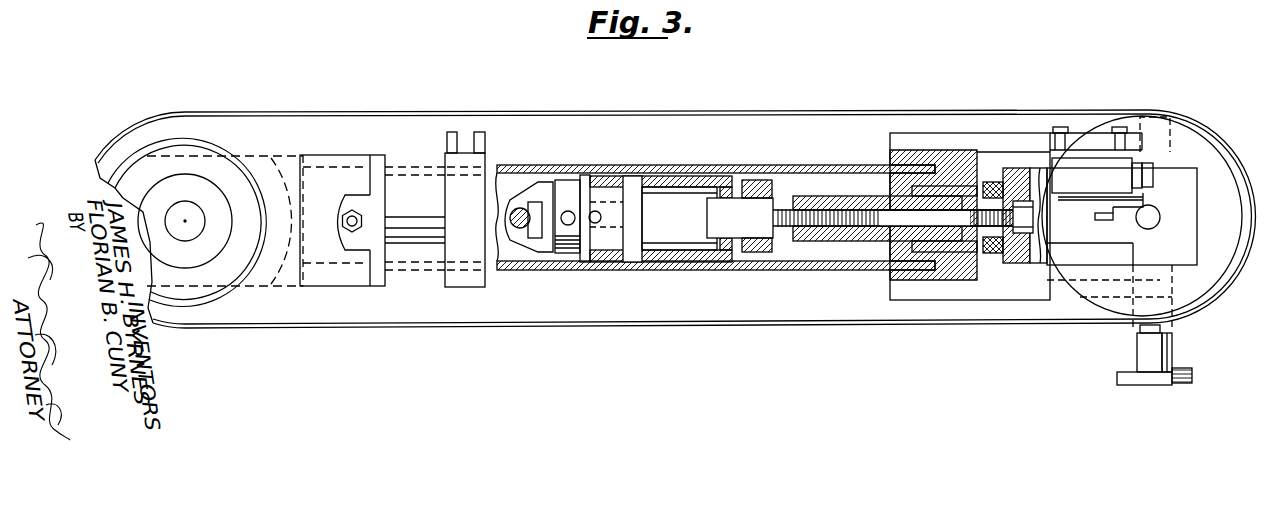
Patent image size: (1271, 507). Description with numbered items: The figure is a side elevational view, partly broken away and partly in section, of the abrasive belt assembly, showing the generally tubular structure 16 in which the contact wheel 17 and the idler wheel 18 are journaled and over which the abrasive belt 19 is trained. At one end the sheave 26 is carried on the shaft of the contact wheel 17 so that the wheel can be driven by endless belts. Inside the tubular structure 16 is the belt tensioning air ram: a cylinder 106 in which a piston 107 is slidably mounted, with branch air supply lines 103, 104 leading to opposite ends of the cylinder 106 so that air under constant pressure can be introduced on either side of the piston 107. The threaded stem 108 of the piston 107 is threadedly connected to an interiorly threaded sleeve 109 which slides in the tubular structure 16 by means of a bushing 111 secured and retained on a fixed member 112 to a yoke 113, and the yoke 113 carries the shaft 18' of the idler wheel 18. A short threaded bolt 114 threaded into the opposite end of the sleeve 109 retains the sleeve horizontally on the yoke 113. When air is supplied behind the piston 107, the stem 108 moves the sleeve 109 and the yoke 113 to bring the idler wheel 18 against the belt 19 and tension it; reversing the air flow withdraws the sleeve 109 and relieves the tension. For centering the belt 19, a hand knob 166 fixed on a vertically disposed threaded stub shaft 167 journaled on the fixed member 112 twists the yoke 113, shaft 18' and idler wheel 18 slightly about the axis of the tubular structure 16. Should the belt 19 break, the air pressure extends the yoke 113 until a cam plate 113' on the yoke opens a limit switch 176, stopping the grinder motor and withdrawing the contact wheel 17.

The sheave 26 is at (168, 142).
The contact wheel 17 is at (177, 120).
The abrasive belt 19 is at (664, 106).
The tubular structure 16 is at (556, 160).
The cylinder 106 is at (613, 177).
The piston 107 is at (637, 187).
The threaded stem 108 is at (760, 200).
The interiorly threaded sleeve 109 is at (815, 198).
The branch air supply line 104 is at (597, 220).
The branch air supply line 103 is at (683, 272).
The bushing 111 is at (918, 153).
The fixed member 112 is at (978, 142).
The yoke 113 is at (1056, 171).
The idler wheel 18 is at (1153, 217).
The shaft 18' is at (1142, 216).
The limit switch 176 is at (1107, 186).
The cam plate 113' is at (1078, 217).
The short threaded bolt 114 is at (1000, 227).
The stub shaft 167 is at (1167, 330).
The hand knob 166 is at (1172, 382).